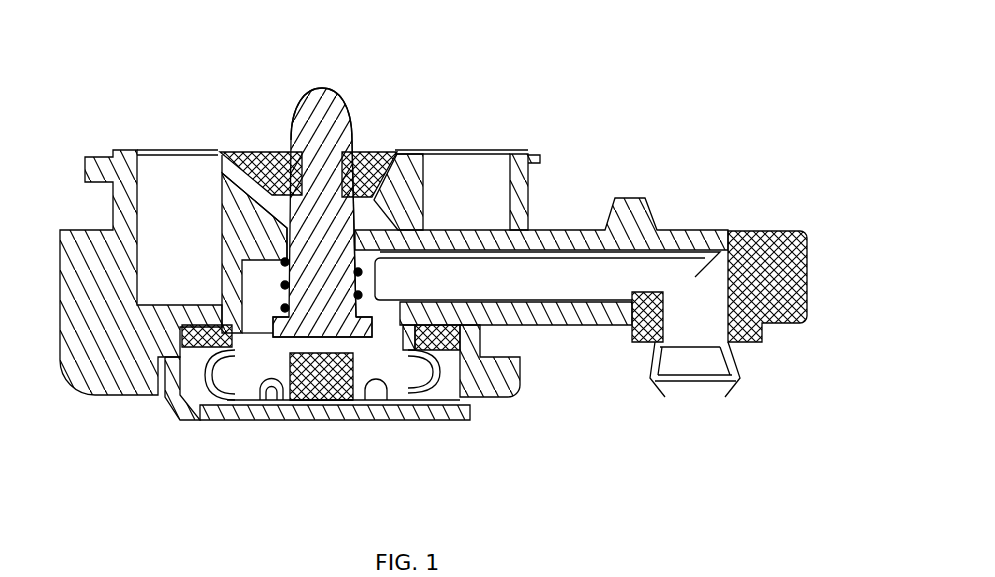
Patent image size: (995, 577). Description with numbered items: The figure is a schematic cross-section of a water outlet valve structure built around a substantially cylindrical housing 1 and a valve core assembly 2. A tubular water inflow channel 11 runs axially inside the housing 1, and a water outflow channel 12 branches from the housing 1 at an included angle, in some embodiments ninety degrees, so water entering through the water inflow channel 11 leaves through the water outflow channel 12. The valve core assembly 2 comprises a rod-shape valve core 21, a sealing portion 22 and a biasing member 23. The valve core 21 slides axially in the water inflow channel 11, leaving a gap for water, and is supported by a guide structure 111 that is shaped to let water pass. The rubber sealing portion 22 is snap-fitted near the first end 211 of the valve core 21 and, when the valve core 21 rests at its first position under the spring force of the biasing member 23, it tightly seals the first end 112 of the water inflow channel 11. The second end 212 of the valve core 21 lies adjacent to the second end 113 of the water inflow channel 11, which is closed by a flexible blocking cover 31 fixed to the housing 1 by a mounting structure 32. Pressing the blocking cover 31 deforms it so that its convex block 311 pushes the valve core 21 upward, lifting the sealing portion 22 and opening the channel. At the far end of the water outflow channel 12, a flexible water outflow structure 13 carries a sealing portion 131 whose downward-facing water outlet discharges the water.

The housing 1 is at (105, 150).
The water inflow channel 11 is at (214, 192).
The guide structure 111 is at (277, 237).
The first end 112 is at (235, 177).
The second end 113 is at (428, 322).
The water outflow channel 12 is at (560, 270).
The water outflow structure 13 is at (773, 323).
The sealing portion 131 is at (677, 370).
The valve core assembly 2 is at (311, 250).
The valve core 21 is at (311, 250).
The first end 211 is at (310, 143).
The second end 212 is at (298, 323).
The sealing portion 22 is at (370, 170).
The biasing member 23 is at (358, 297).
The blocking cover 31 is at (320, 426).
The convex block 311 is at (323, 367).
The mounting structure 32 is at (173, 397).